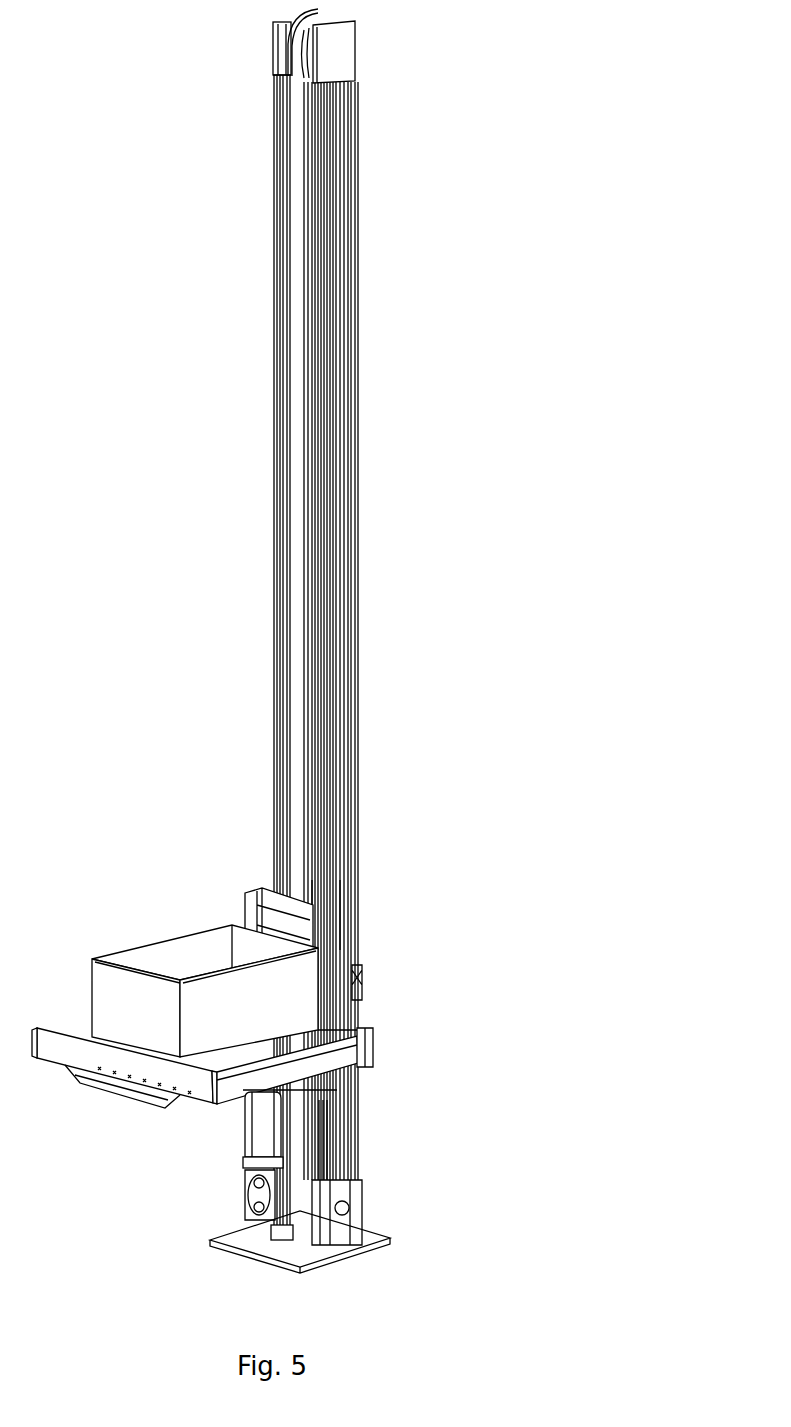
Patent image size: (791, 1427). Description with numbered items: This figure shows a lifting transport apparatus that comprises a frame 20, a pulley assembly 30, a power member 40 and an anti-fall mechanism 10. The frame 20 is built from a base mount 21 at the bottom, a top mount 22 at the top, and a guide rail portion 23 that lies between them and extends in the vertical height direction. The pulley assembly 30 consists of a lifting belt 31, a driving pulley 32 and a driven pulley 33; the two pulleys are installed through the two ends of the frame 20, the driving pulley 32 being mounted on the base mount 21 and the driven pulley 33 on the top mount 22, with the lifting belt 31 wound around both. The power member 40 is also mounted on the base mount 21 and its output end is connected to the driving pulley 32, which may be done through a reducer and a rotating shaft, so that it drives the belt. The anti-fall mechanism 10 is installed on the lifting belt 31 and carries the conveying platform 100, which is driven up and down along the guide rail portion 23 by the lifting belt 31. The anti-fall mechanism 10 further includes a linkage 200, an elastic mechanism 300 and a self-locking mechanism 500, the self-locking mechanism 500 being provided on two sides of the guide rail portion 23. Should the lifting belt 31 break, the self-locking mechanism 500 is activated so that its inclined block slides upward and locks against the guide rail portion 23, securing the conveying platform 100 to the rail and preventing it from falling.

The anti-fall mechanism 10 is at (350, 1015).
The frame 20 is at (260, 1253).
The base mount 21 is at (300, 1263).
The top mount 22 is at (342, 52).
The guide rail portion 23 is at (356, 842).
The pulley assembly 30 is at (352, 1115).
The lifting belt 31 is at (300, 690).
The driving pulley 32 is at (350, 1187).
The driven pulley 33 is at (300, 44).
The power member 40 is at (248, 1217).
The conveying platform 100 is at (245, 920).
The linkage 200 is at (340, 895).
The elastic mechanism 300 is at (282, 885).
The self-locking mechanism 500 is at (372, 948).